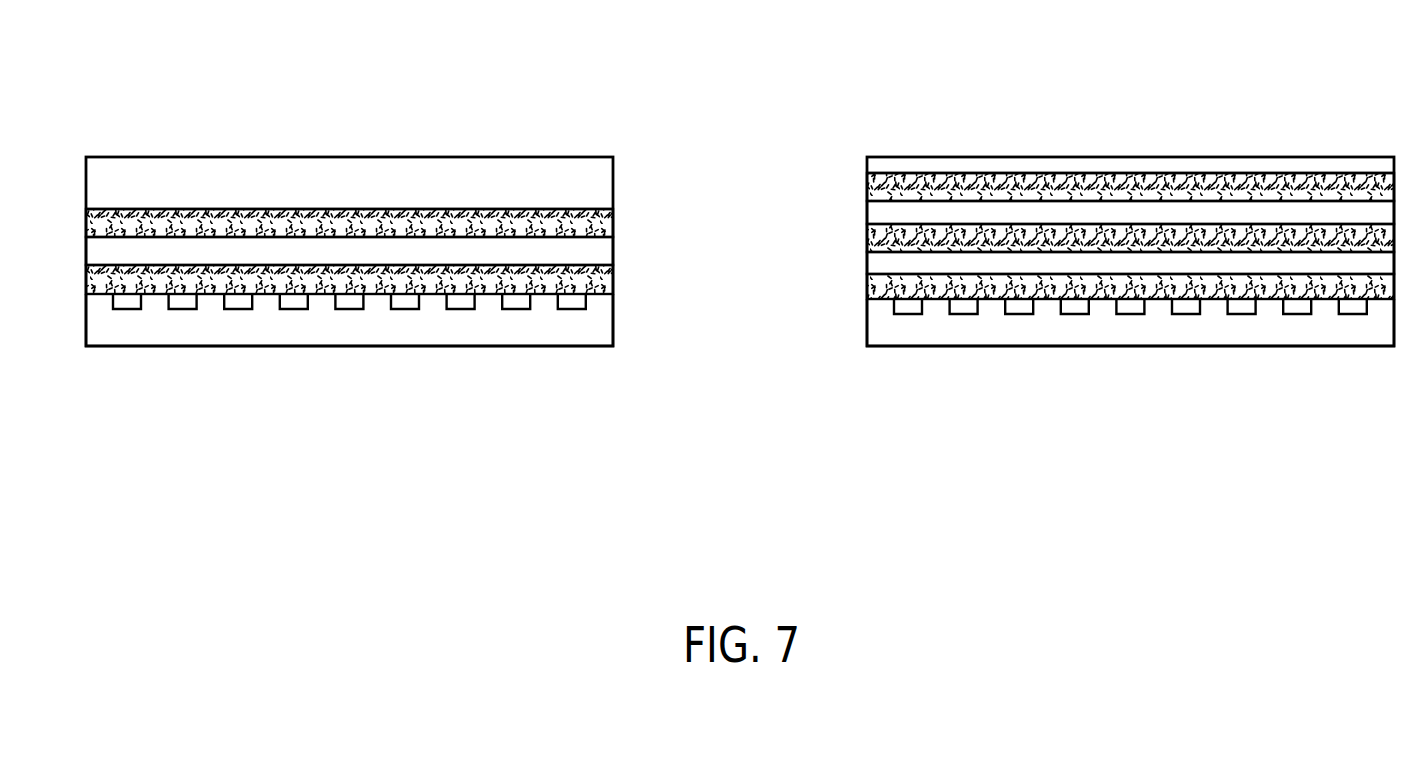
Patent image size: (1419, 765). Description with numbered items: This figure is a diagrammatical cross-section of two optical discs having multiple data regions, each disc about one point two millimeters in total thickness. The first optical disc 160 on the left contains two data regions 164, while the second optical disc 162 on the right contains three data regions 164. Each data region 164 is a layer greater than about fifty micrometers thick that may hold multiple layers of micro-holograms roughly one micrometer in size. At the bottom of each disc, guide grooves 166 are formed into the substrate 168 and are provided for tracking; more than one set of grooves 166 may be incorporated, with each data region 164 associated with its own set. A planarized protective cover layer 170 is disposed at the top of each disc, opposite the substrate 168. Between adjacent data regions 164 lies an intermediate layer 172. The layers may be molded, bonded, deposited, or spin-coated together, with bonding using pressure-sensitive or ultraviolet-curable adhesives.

The first optical disc 160 is at (305, 108).
The second optical disc 162 is at (1153, 119).
The data region 164 is at (867, 283).
The guide grooves 166 is at (515, 309).
The substrate 168 is at (497, 347).
The cover layer 170 is at (893, 157).
The intermediate layer 172 is at (925, 263).